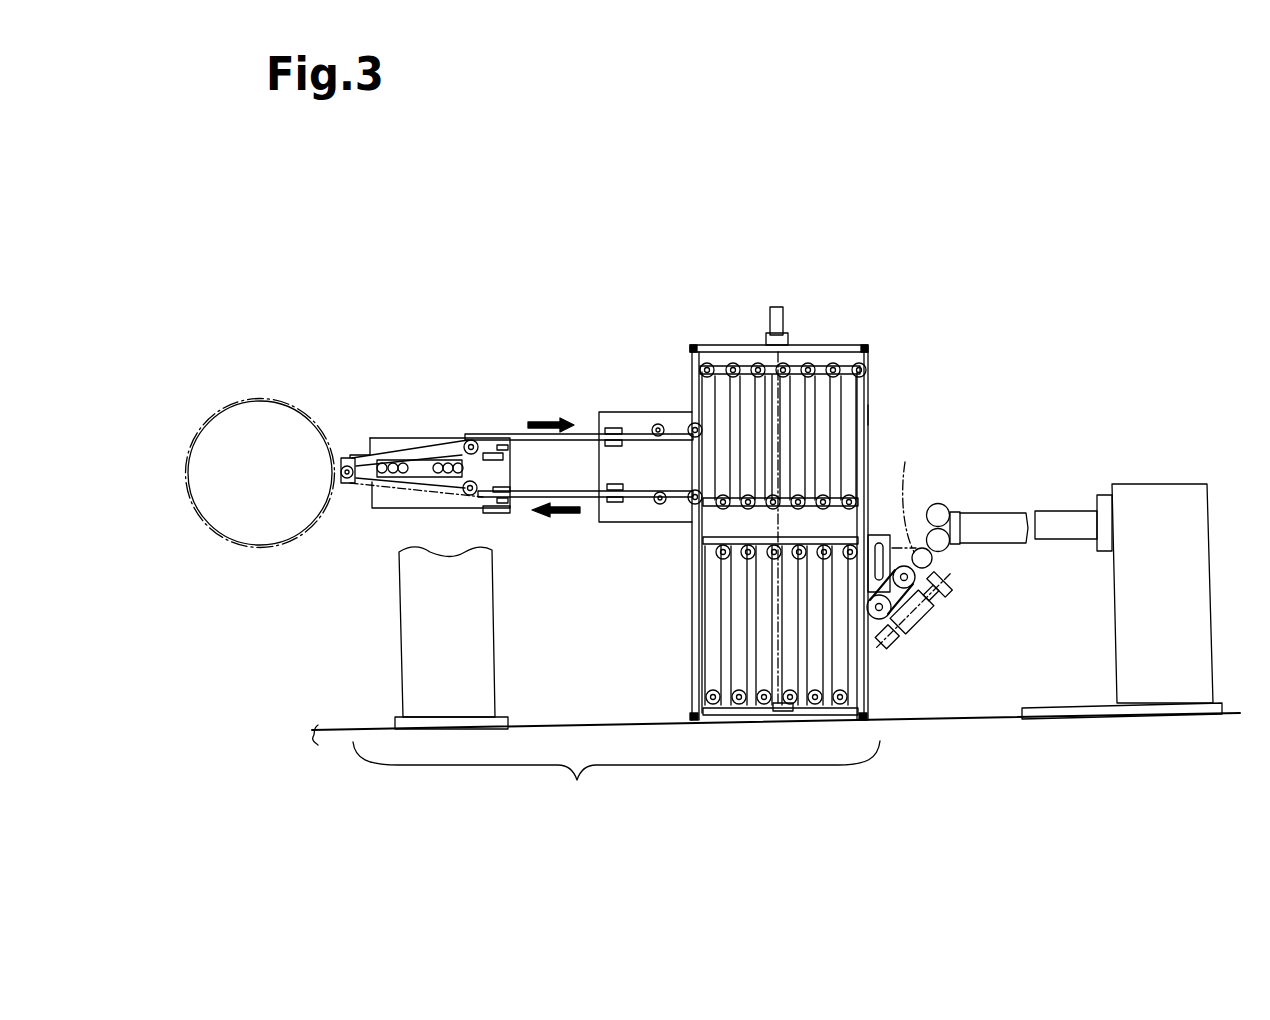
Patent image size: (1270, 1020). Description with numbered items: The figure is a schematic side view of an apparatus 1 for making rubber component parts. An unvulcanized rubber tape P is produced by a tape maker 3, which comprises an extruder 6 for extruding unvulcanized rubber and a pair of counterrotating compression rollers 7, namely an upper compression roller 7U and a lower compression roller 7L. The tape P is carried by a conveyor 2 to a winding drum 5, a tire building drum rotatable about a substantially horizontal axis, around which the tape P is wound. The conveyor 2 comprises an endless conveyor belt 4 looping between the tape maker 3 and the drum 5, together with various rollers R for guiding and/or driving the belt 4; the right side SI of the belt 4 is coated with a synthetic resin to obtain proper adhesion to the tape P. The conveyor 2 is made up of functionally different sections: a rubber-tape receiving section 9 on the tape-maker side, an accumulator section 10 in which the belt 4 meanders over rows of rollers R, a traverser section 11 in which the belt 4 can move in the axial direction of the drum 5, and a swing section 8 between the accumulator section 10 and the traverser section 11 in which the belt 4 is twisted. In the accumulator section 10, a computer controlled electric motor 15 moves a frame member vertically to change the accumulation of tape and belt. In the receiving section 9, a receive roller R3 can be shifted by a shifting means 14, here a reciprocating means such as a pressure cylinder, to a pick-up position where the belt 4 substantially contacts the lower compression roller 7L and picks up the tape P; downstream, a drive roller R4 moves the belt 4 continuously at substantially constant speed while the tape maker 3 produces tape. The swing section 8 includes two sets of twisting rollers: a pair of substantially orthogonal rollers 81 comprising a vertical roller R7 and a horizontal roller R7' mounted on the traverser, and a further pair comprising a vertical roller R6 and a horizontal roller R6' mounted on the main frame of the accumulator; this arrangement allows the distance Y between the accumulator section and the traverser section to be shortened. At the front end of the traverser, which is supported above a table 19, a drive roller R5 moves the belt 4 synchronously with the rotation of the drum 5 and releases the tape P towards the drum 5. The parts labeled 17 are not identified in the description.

The apparatus for making rubber component parts 1 is at (1078, 263).
The conveyor 2 is at (781, 430).
The tape maker 3 is at (1188, 457).
The endless conveyor belt 4 is at (862, 370).
The winding drum 5 is at (243, 511).
The extruder 6 is at (1072, 520).
The pair of counterrotating compression rollers 7 is at (1012, 446).
The upper compression roller 7U is at (948, 503).
The lower compression roller 7L is at (955, 535).
The swing section 8 is at (636, 377).
The rubber-tape receiving section 9 is at (948, 563).
The accumulator section 10 is at (730, 328).
The traverser section 11 is at (497, 409).
The means for shifting the receive roller 14 is at (895, 648).
The computer controlled electric motor 15 is at (770, 313).
The endless belts 17 is at (722, 613).
The table 19 is at (400, 647).
The pair of substantially orthogonal rollers 81 is at (513, 340).
The rollers R is at (808, 364).
The receive roller R3 is at (944, 582).
The drive roller R4 is at (879, 620).
The drive roller R5 is at (339, 490).
The vertical roller R6 is at (610, 458).
The horizontal roller R6' is at (658, 458).
The vertical roller R7 is at (511, 457).
The horizontal roller R7' is at (488, 475).
The unvulcanized rubber tape P is at (905, 462).
The right side of the conveyor belt SI is at (868, 413).
The distance between accumulator section and traverser section Y is at (616, 777).